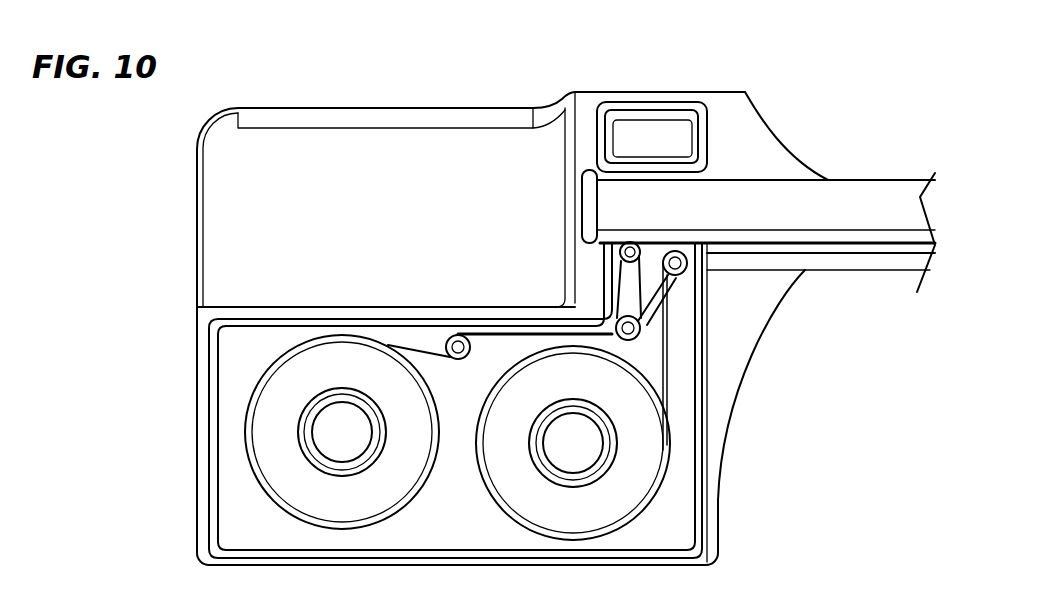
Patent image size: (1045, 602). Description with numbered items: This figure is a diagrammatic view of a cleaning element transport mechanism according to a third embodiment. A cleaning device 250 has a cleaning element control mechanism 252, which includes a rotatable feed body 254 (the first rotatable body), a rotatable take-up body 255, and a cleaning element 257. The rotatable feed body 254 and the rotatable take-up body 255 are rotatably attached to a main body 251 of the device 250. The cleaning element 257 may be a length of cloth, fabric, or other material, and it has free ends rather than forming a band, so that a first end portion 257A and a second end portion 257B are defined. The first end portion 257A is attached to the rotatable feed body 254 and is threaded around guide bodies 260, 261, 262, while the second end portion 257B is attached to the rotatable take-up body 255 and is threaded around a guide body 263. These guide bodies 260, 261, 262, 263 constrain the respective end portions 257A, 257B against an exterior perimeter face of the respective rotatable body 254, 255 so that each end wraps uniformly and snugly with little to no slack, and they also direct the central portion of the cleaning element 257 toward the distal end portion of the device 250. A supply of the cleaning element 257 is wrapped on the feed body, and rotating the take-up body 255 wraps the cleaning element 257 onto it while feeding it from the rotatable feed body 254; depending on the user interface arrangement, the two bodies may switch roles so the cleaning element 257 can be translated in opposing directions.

The cleaning device 250 is at (512, 76).
The main body 251 is at (743, 103).
The cleaning element control mechanism 252 is at (683, 490).
The rotatable feed body 254 is at (283, 388).
The rotatable take-up body 255 is at (645, 435).
The cleaning element 257 is at (668, 331).
The first end portion 257A is at (440, 350).
The second end portion 257B is at (668, 394).
The guide body 260 is at (450, 338).
The guide body 261 is at (612, 300).
The guide body 262 is at (610, 243).
The guide body 263 is at (688, 268).